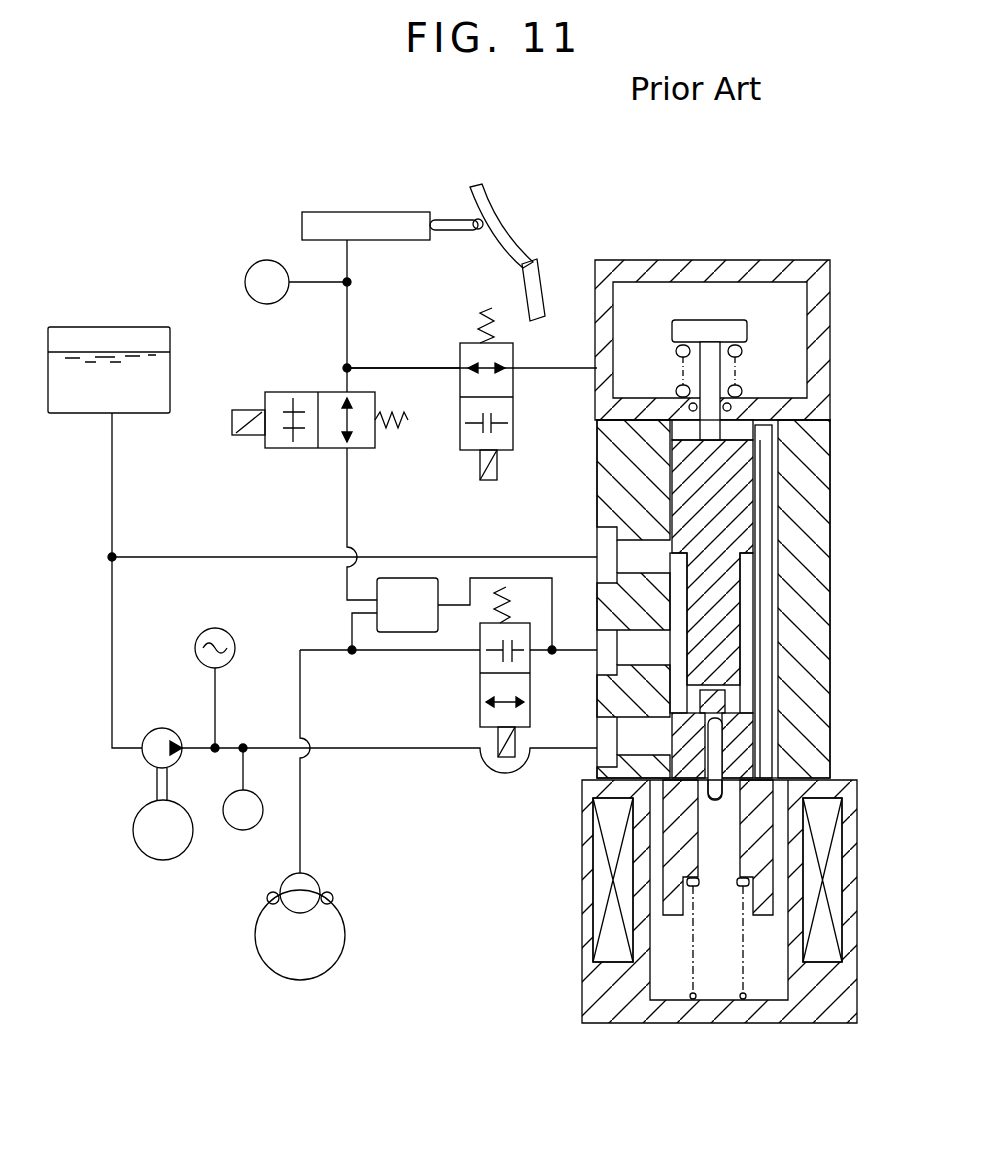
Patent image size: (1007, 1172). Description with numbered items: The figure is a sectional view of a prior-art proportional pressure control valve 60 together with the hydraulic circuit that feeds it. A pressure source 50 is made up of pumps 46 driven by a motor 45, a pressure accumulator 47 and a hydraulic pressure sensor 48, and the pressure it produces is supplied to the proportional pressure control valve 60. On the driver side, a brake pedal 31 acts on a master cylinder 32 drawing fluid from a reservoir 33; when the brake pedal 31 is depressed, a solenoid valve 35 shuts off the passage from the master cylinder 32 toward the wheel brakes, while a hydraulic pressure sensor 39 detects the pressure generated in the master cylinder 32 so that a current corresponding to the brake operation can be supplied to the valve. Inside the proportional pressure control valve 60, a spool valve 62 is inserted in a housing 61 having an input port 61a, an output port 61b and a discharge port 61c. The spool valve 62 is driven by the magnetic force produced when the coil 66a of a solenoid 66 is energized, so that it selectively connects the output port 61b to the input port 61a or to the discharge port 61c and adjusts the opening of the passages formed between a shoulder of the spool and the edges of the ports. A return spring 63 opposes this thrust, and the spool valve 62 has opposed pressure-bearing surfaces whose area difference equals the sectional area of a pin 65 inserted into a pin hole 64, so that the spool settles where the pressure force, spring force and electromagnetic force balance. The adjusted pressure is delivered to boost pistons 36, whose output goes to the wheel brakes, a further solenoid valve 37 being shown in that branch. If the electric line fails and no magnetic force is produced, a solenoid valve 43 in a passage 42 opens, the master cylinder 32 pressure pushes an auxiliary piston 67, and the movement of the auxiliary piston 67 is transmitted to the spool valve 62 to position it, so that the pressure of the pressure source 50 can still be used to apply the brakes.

The brake pedal 31 is at (503, 246).
The master cylinder 32 is at (338, 212).
The reservoir tank 33 is at (78, 327).
The solenoid valve 35 is at (273, 453).
The boost pistons 36 is at (403, 635).
The solenoid valve 37 is at (480, 712).
The hydraulic pressure sensor 39 is at (248, 270).
The passage 42 is at (402, 368).
The solenoid valve 43 is at (457, 450).
The motor 45 is at (177, 857).
The pumps 46 is at (145, 767).
The pressure accumulator 47 is at (233, 636).
The hydraulic pressure sensor 48 is at (242, 833).
The pressure source 50 is at (107, 768).
The proportional pressure control valve 60 is at (833, 650).
The housing 61 is at (820, 582).
The input port 61a is at (607, 750).
The output port 61b is at (607, 662).
The discharge port 61c is at (600, 545).
The spool valve 62 is at (740, 488).
The return spring 63 is at (752, 985).
The pin hole 64 is at (722, 702).
The pin 65 is at (722, 754).
The solenoid 66 is at (587, 919).
The coil 66a is at (605, 877).
The auxiliary piston 67 is at (740, 330).